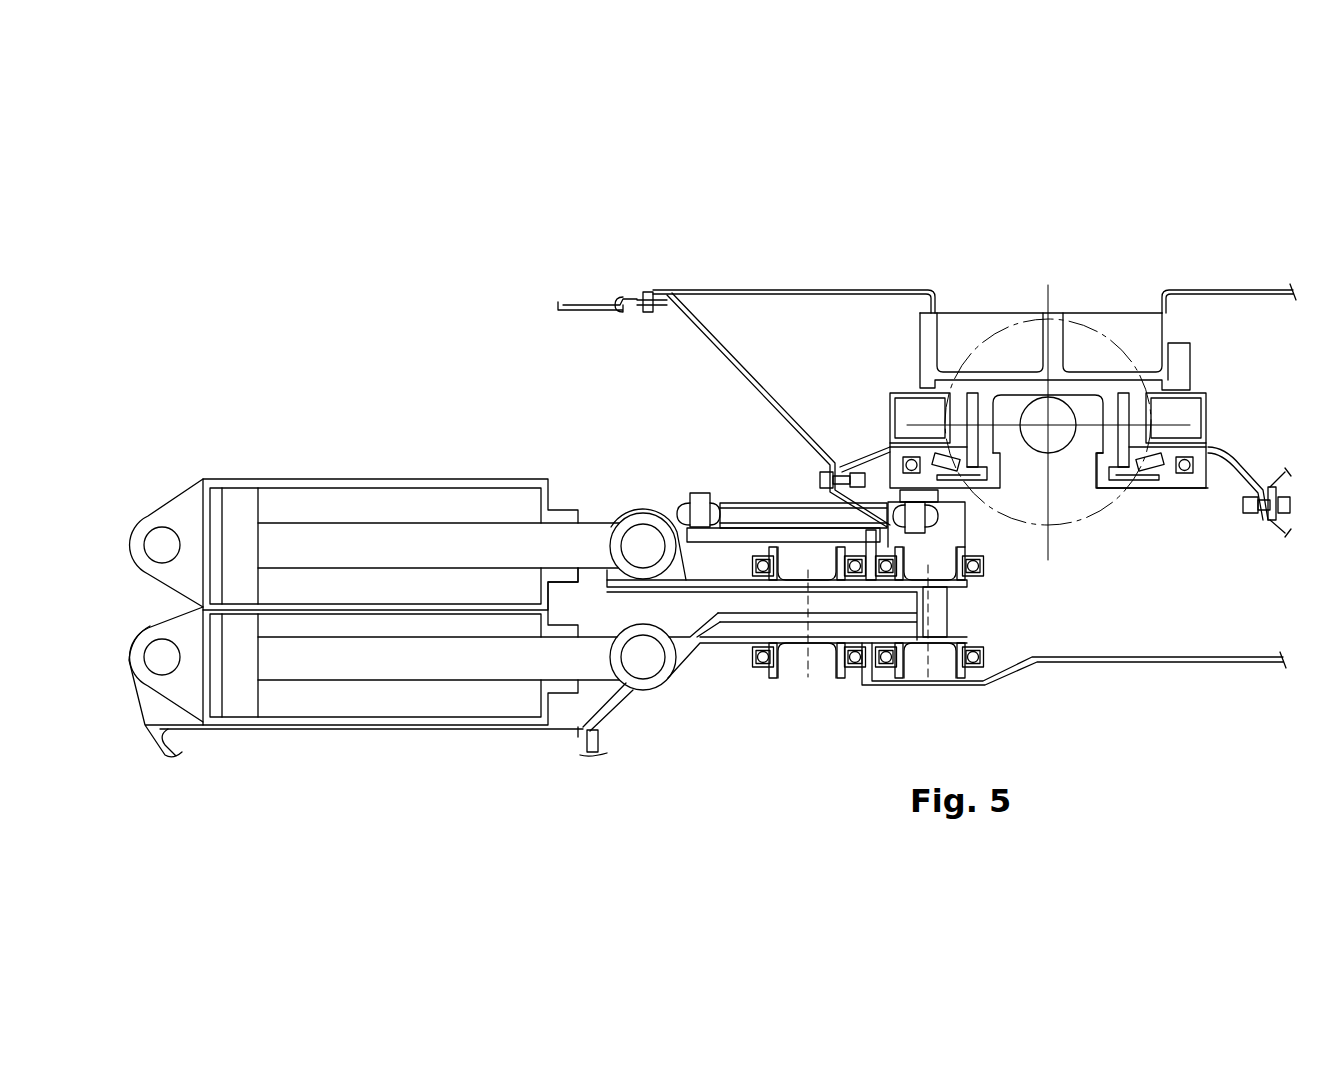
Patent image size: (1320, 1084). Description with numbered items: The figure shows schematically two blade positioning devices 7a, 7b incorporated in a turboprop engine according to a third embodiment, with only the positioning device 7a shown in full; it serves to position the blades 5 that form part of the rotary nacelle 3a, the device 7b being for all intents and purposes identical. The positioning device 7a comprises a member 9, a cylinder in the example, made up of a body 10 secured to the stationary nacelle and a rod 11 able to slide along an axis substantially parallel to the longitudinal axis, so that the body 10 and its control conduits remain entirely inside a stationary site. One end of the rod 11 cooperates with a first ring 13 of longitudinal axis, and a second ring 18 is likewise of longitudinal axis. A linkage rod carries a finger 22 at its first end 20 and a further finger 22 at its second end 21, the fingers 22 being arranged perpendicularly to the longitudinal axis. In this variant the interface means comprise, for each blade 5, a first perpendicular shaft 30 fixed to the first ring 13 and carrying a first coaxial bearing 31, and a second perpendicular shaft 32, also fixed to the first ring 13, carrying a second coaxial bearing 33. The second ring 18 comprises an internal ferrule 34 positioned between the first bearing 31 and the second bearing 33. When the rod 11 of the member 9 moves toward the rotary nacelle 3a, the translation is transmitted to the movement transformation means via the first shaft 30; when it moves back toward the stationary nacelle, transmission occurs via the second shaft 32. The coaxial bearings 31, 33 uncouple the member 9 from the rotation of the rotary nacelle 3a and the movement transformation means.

The rotary nacelle 3a is at (712, 290).
The blade 5 is at (870, 289).
The blade positioning device 7a is at (143, 485).
The blade positioning device 7b is at (112, 699).
The member 9 is at (383, 598).
The body 10 is at (403, 480).
The rod 11 is at (467, 601).
The first ring 13 is at (710, 583).
The second ring 18 is at (772, 525).
The first end 20 is at (690, 505).
The second end 21 is at (948, 458).
The finger 22 is at (700, 495).
The first perpendicular shaft 30 is at (807, 613).
The first coaxial bearing 31 is at (752, 568).
The second perpendicular shaft 32 is at (926, 591).
The second coaxial bearing 33 is at (988, 573).
The internal ferrule 34 is at (850, 548).